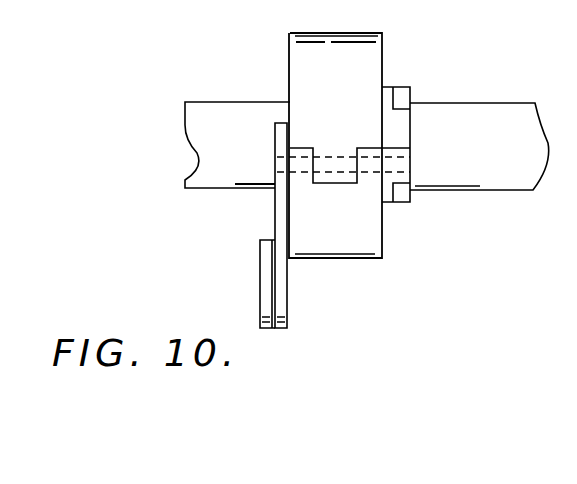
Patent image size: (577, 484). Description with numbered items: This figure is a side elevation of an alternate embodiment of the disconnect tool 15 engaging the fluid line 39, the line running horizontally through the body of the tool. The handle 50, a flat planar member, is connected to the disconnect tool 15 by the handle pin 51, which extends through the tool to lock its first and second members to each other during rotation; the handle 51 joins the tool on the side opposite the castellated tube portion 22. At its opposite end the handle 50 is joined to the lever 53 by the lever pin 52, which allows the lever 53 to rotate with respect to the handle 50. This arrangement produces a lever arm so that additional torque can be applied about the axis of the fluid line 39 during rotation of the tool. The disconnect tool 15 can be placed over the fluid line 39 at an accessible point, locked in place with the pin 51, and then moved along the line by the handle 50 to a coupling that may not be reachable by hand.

The disconnect tool 15 is at (363, 272).
The castellated tube portion 22 is at (414, 203).
The fluid line 39 is at (497, 198).
The handle 50 is at (270, 220).
The handle pin 51 is at (275, 158).
The lever pin 52 is at (288, 321).
The lever 53 is at (260, 306).